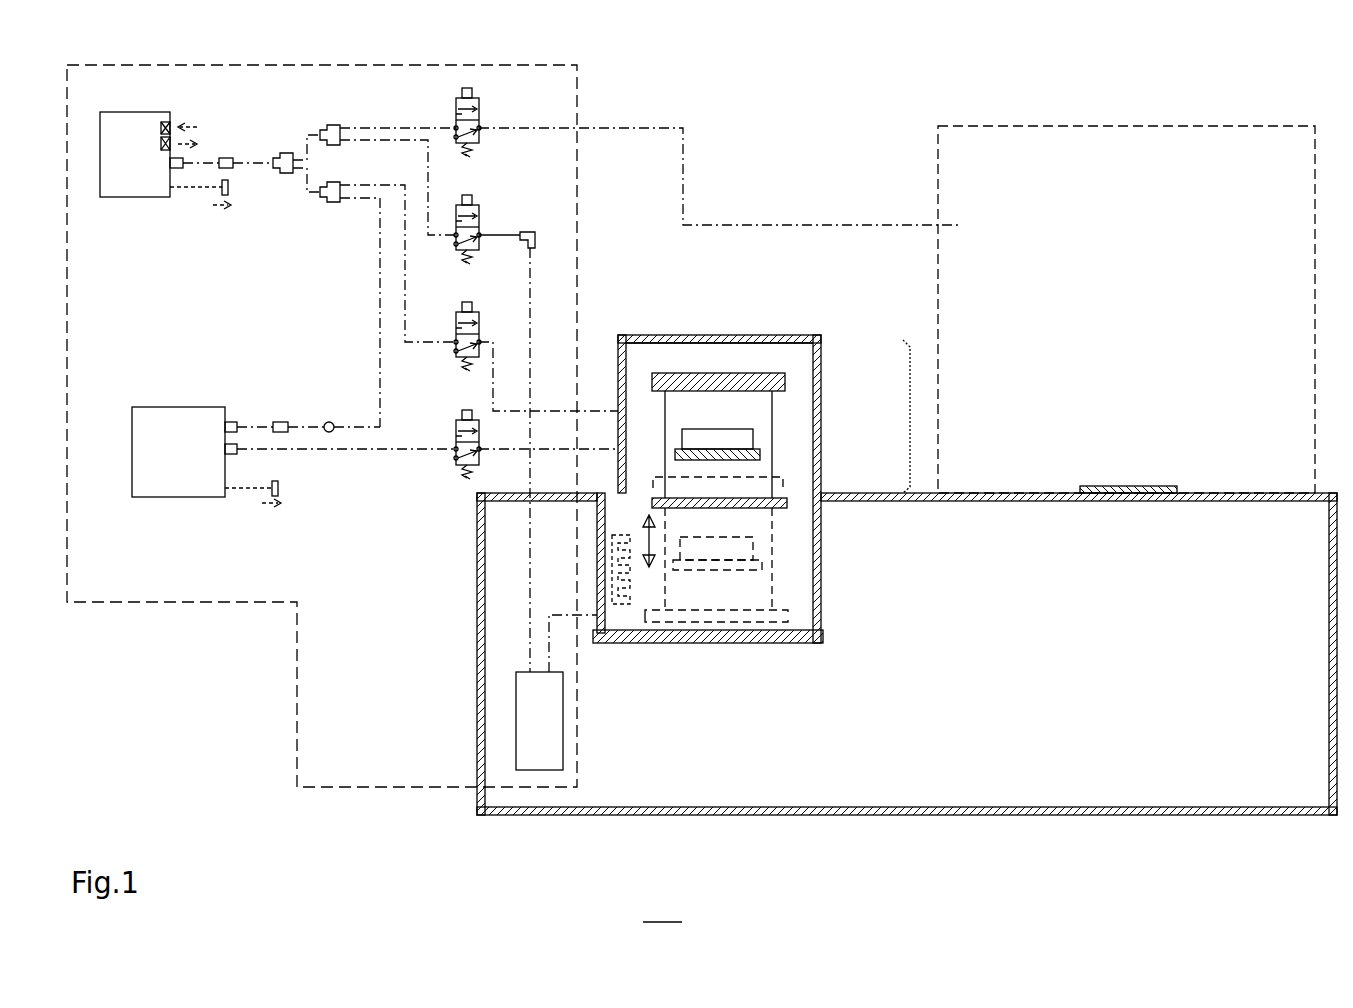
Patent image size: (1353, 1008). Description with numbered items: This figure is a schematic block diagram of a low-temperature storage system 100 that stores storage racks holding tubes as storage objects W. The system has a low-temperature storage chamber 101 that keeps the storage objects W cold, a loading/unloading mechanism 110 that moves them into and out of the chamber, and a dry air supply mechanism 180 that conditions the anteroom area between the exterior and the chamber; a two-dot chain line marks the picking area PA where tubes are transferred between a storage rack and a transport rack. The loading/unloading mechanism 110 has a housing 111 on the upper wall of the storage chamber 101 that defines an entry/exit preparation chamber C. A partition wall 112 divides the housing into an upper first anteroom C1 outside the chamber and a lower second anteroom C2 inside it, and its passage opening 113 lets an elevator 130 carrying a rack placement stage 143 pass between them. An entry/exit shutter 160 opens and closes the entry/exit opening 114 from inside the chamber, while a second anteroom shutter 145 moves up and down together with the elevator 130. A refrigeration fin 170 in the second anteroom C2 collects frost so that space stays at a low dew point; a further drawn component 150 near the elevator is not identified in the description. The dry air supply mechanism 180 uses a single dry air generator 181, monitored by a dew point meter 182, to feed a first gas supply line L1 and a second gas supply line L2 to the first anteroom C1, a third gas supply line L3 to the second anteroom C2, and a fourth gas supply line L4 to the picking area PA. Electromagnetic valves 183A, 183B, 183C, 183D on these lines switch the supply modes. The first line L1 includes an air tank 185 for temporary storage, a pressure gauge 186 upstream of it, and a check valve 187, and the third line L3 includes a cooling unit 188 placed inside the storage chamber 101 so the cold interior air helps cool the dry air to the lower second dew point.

The low-temperature storage system 100 is at (662, 910).
The low-temperature storage chamber 101 is at (477, 668).
The loading/unloading mechanism 110 is at (824, 348).
The housing 111 is at (664, 334).
The partition wall 112 is at (788, 512).
The passage opening 113 is at (750, 452).
The entry/exit opening 114 is at (800, 644).
The elevator 130 is at (768, 368).
The rack placement stage 143 is at (762, 455).
The second anteroom shutter 145 is at (655, 503).
The support column 150 is at (733, 373).
The entry/exit shutter 160 is at (690, 644).
The refrigeration fin 170 is at (612, 573).
The dry air supply mechanism 180 is at (583, 90).
The dry air generator 181 is at (122, 115).
The dew point meter 182 is at (225, 158).
The electromagnetic valve 183A is at (455, 456).
The electromagnetic valve 183B is at (478, 325).
The electromagnetic valve 183C is at (478, 215).
The electromagnetic valve 183D is at (478, 108).
The air tank 185 is at (180, 488).
The pressure gauge 186 is at (281, 420).
The check valve 187 is at (329, 420).
The cooling unit 188 is at (541, 766).
The storage objects W is at (698, 422).
The entry/exit preparation chamber C is at (913, 416).
The first anteroom C1 is at (793, 378).
The second anteroom C2 is at (800, 537).
The first gas supply line L1 is at (375, 233).
The second gas supply line L2 is at (500, 372).
The third gas supply line L3 is at (535, 266).
The fourth gas supply line L4 is at (688, 165).
The picking area PA is at (1078, 126).